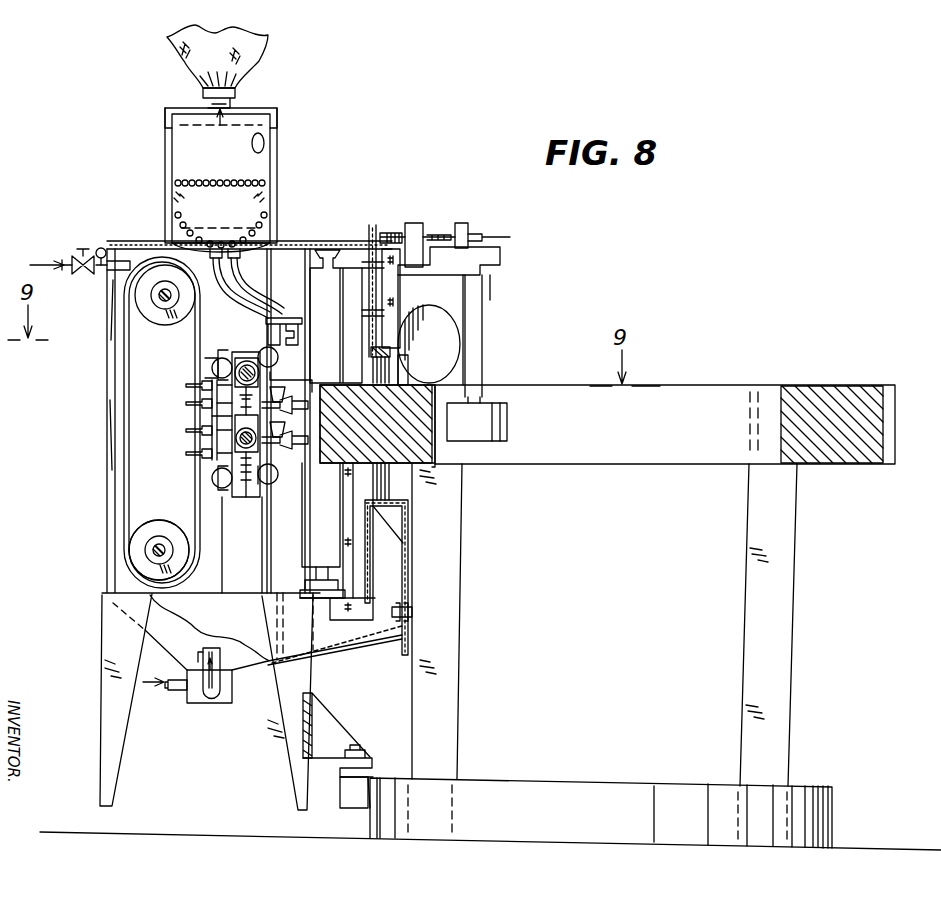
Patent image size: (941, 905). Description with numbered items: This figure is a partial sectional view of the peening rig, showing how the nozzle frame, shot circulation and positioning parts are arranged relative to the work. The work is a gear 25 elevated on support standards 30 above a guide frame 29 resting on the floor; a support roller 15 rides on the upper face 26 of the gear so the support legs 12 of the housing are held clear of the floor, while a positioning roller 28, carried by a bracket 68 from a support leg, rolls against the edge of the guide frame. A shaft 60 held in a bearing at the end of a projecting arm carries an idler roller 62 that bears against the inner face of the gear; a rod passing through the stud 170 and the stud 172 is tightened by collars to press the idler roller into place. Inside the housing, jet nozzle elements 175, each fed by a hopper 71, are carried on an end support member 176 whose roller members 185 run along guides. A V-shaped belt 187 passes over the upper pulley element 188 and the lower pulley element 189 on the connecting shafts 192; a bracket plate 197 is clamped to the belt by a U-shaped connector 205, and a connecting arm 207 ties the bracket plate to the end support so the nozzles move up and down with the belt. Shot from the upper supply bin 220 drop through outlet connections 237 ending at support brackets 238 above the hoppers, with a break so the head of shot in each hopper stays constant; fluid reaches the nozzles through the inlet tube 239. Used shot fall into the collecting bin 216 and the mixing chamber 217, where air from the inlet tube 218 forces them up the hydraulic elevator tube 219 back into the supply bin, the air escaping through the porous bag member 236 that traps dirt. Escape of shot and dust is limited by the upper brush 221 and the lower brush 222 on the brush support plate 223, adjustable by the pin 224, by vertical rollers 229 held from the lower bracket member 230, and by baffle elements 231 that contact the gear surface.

The porous bag member 236 is at (262, 58).
The upper supply bin 220 is at (277, 148).
The inlet tube 239 is at (80, 253).
The connecting shaft 192 is at (160, 294).
The upper pulley element 188 is at (162, 320).
The belt 187 is at (127, 404).
The U-shaped connector 205 is at (190, 386).
The bracket plate 197 is at (190, 401).
The connecting arm 207 is at (212, 418).
The roller member 185 is at (222, 366).
The hopper 71 is at (289, 394).
The jet nozzle element 175 is at (292, 452).
The outlet connection 237 is at (232, 297).
The end support member 176 is at (264, 262).
The vertical roller 229 is at (318, 284).
The support bracket 238 is at (288, 318).
The stud 170 is at (418, 215).
The stud 172 is at (466, 222).
The support roller 15 is at (428, 306).
The shaft 60 is at (490, 287).
The upper brush 221 is at (396, 368).
The upper face 26 is at (498, 384).
The gear 25 is at (722, 386).
The idler roller 62 is at (508, 426).
The lower brush 222 is at (390, 482).
The brush support plate 223 is at (405, 497).
The baffle element 231 is at (370, 558).
The pin 224 is at (412, 612).
The lower bracket member 230 is at (304, 588).
The support standard 30 is at (455, 700).
The guide frame 29 is at (499, 777).
The bracket 68 is at (355, 745).
The positioning roller 28 is at (350, 806).
The support leg 12 is at (118, 768).
The collecting bin 216 is at (264, 678).
The mixing chamber 217 is at (205, 705).
The inlet tube 218 is at (176, 694).
The hydraulic elevator tube 219 is at (207, 655).
The lower pulley element 189 is at (132, 551).